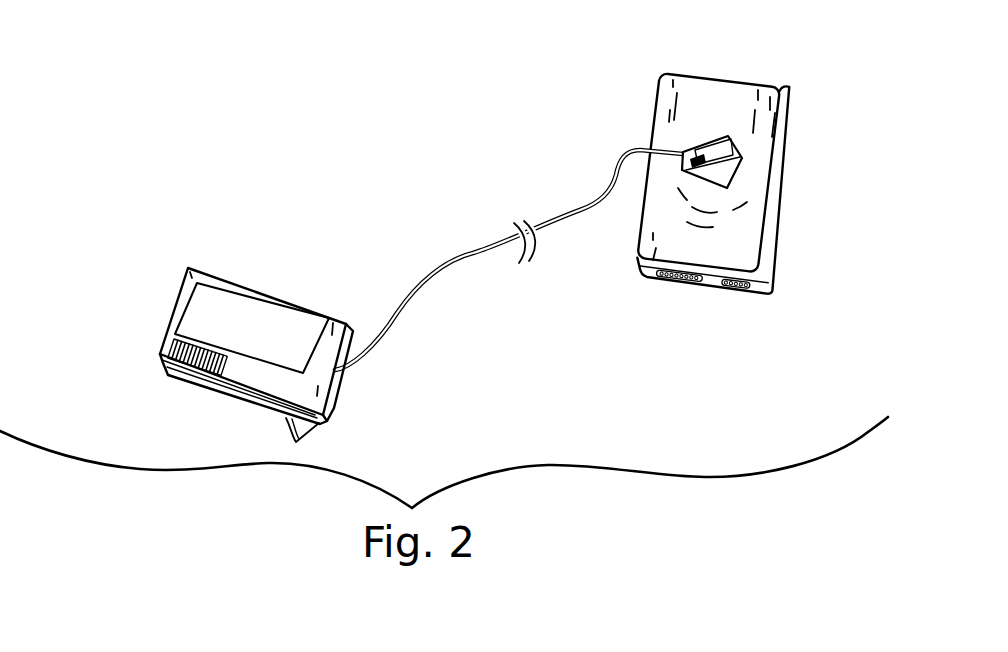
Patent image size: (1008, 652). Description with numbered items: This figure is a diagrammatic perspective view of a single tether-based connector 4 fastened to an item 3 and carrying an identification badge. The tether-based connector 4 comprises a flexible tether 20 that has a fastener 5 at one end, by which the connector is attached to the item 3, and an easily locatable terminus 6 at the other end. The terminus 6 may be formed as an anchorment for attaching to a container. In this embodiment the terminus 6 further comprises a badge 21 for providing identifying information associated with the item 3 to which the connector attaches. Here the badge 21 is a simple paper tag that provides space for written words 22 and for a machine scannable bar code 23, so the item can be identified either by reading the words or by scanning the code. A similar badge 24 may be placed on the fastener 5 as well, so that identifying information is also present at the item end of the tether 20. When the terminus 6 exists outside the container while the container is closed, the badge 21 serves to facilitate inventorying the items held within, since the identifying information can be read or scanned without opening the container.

The item 3 is at (793, 102).
The tether-based connector 4 is at (216, 318).
The fastener 5 is at (780, 97).
The terminus 6 is at (116, 266).
The flexible tether 20 is at (445, 265).
The badge 21 is at (202, 289).
The written words 22 is at (190, 311).
The machine scannable bar code 23 is at (180, 349).
The badge 24 is at (740, 157).